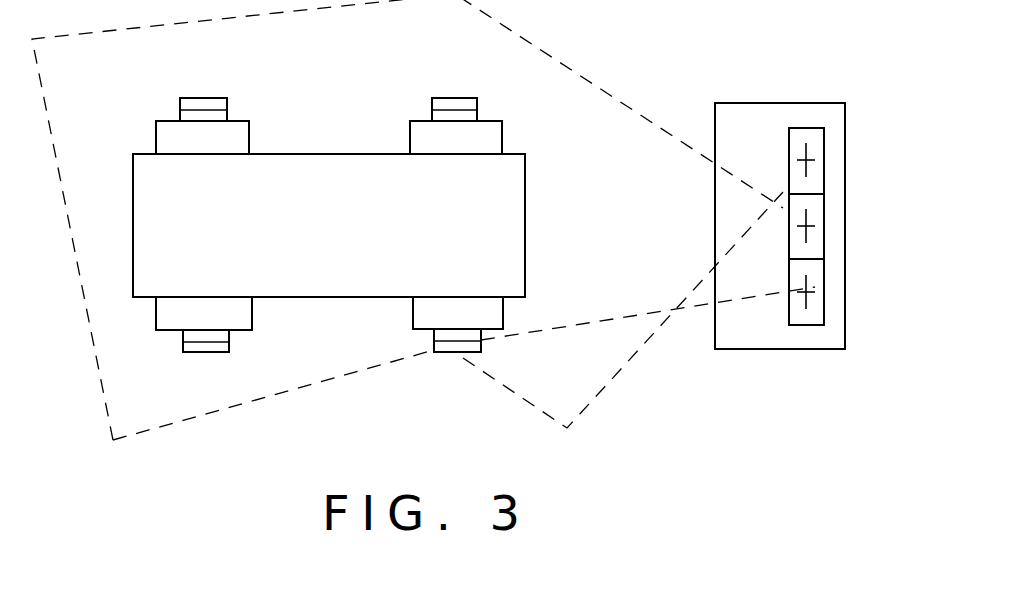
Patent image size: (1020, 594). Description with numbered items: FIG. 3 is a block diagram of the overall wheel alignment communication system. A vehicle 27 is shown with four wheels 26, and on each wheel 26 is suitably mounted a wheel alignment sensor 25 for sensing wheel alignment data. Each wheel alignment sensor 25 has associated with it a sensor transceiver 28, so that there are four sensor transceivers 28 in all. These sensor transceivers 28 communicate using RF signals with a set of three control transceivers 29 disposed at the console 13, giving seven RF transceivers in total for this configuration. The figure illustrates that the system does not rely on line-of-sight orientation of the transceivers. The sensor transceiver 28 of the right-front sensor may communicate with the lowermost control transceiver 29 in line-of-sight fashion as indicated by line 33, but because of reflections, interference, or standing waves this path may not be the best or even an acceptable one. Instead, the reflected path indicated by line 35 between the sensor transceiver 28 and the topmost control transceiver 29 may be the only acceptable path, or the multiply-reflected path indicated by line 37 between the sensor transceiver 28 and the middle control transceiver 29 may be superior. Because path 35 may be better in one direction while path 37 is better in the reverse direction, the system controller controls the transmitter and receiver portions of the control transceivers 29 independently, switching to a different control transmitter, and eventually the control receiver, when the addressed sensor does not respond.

The console 13 is at (815, 103).
The wheel alignment sensor 25 is at (227, 115).
The wheel 26 is at (250, 140).
The vehicle 27 is at (344, 242).
The sensor transceiver 28 is at (200, 97).
The control transceiver 29 is at (812, 154).
The line 33 is at (594, 323).
The line 35 is at (613, 377).
The line 37 is at (567, 67).